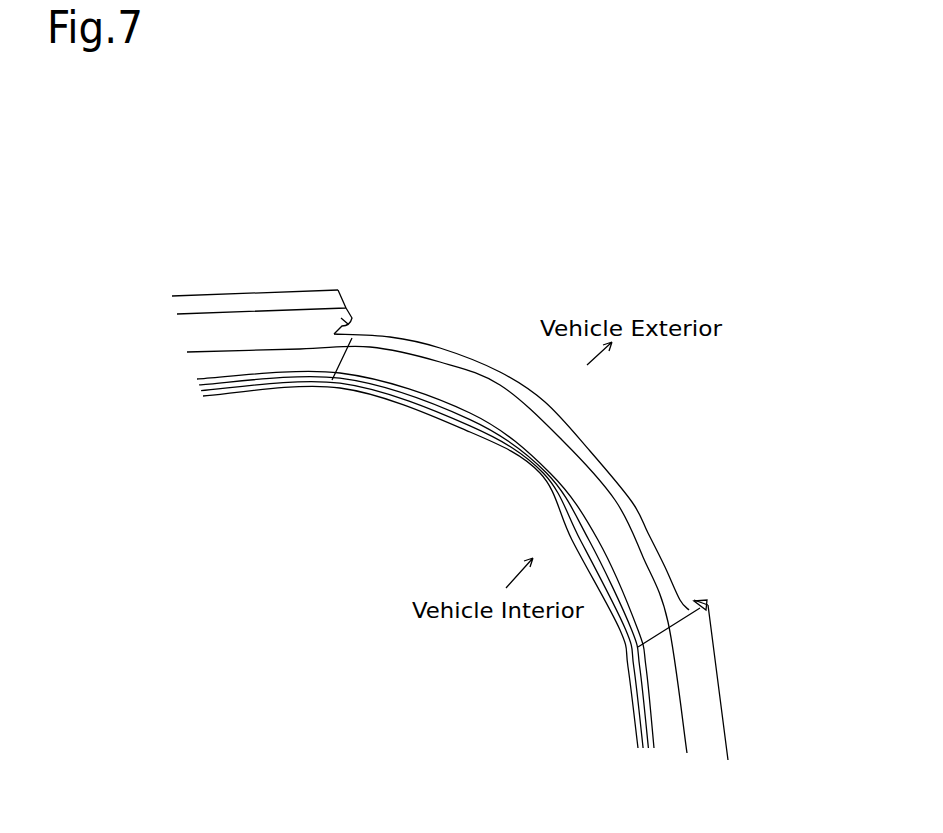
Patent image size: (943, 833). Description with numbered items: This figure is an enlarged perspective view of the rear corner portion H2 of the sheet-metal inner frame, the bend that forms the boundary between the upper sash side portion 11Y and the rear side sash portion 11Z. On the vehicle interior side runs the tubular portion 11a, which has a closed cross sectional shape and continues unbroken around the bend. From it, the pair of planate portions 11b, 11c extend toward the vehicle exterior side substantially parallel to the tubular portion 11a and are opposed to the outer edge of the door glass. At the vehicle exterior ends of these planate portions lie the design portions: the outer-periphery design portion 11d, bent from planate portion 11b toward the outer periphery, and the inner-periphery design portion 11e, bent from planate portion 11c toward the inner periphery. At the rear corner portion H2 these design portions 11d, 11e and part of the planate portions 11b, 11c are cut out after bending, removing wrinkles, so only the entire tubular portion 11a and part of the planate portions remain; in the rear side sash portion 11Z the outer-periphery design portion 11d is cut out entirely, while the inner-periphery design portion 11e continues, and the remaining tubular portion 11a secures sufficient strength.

The tubular portion 11a is at (473, 409).
The planate portion 11b is at (232, 328).
The planate portion 11c is at (341, 328).
The outer-periphery design portion 11d is at (305, 298).
The inner-periphery design portion 11e is at (348, 318).
The upper sash side portion 11Y is at (233, 428).
The rear side sash portion 11Z is at (745, 755).
The rear corner portion H2 is at (596, 422).